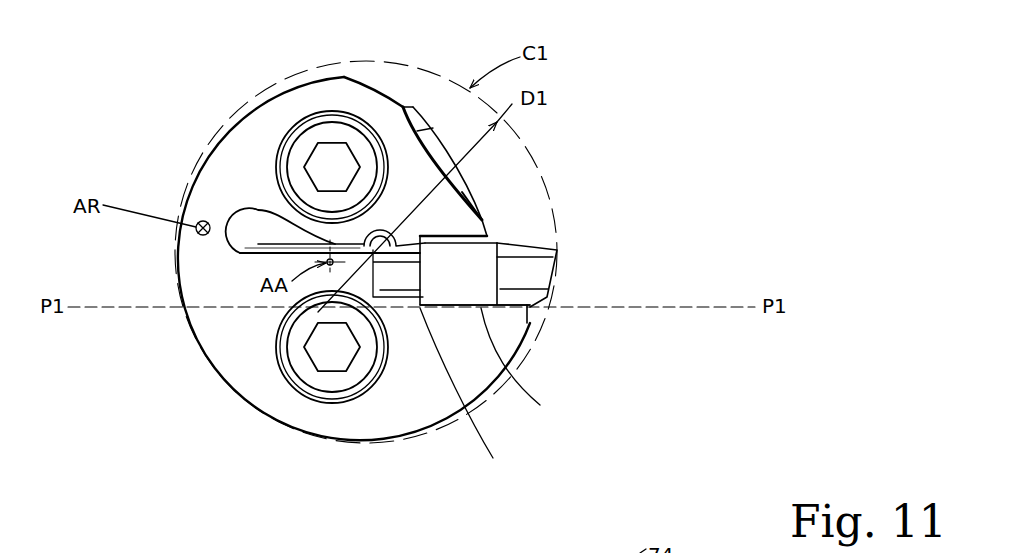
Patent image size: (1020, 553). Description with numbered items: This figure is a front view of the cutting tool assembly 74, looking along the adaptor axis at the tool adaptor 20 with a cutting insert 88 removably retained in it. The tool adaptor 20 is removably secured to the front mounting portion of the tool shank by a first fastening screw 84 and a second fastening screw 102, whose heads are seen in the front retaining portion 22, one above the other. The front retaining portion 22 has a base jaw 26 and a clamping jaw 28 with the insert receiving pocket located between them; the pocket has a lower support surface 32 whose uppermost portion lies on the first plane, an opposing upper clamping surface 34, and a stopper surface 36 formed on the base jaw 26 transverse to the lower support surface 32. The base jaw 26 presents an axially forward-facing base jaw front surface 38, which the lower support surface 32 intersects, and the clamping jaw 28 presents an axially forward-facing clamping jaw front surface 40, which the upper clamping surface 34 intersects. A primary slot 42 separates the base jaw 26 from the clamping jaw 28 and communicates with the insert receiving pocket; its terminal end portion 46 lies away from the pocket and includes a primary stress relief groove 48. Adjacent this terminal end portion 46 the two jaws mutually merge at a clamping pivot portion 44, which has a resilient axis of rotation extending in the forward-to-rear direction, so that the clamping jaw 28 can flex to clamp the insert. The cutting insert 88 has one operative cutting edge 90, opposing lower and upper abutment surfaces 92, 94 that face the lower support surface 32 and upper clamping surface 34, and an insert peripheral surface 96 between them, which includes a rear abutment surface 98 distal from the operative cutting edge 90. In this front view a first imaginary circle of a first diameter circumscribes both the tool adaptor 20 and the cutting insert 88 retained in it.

The tool adaptor 20 is at (197, 180).
The front retaining portion 22 is at (305, 100).
The base jaw 26 is at (383, 393).
The clamping jaw 28 is at (370, 103).
The lower support surface 32 is at (527, 310).
The upper clamping surface 34 is at (480, 243).
The stopper surface 36 is at (420, 308).
The base jaw front surface 38 is at (472, 345).
The clamping jaw front surface 40 is at (422, 188).
The primary slot 42 is at (272, 254).
The clamping pivot portion 44 is at (200, 248).
The terminal end portion 46 is at (258, 243).
The primary stress relief groove 48 is at (247, 230).
The cutting tool assembly 74 is at (452, 62).
The first fastening screw 84 is at (298, 158).
The cutting insert 88 is at (540, 268).
The operative cutting edge 90 is at (557, 250).
The lower abutment surface 92 is at (481, 308).
The upper abutment surface 94 is at (470, 230).
The insert peripheral surface 96 is at (472, 280).
The rear abutment surface 98 is at (365, 265).
The second fastening screw 102 is at (300, 363).